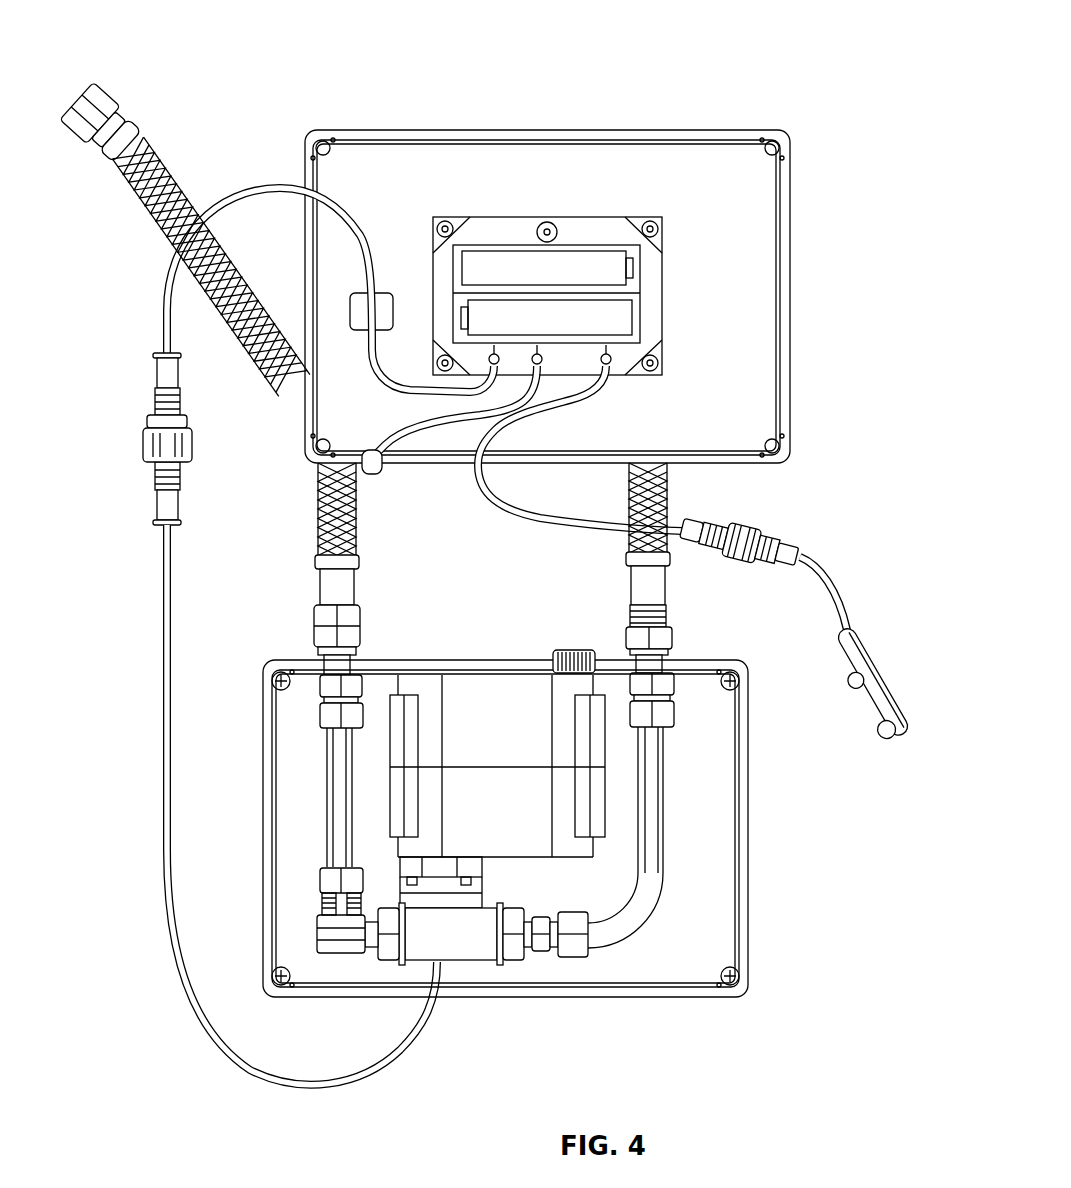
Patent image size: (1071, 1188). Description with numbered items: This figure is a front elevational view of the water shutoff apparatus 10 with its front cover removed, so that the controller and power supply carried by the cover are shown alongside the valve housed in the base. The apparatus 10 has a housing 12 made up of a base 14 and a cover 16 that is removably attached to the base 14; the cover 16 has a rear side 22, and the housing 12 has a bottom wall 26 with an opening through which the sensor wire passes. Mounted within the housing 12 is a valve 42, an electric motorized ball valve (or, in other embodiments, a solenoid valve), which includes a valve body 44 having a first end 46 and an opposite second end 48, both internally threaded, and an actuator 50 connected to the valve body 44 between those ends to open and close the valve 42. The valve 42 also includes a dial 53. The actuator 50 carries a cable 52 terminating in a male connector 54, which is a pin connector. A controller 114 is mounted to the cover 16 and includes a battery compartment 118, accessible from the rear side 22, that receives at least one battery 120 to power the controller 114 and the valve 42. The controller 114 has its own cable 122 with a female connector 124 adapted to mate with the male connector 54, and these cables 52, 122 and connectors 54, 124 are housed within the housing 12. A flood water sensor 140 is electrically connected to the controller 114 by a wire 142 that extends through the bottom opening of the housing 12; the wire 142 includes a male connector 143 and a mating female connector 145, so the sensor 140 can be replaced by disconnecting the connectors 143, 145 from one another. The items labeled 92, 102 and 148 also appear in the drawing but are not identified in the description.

The water shutoff apparatus 10 is at (858, 463).
The housing 12 is at (752, 760).
The base 14 is at (745, 838).
The cover 16 is at (792, 338).
The rear side 22 is at (752, 292).
The bottom wall 26 is at (470, 467).
The valve 42 is at (400, 868).
The valve body 44 is at (462, 945).
The first end 46 is at (400, 960).
The second end 48 is at (497, 958).
The actuator 50 is at (478, 705).
The cable 52 is at (178, 712).
The dial 53 is at (572, 655).
The male connector 54 is at (158, 447).
The supply hose 92 is at (335, 508).
The output hose 102 is at (655, 480).
The controller 114 is at (600, 232).
The battery compartment 118 is at (455, 266).
The battery 120 is at (510, 272).
The cable 122 is at (263, 195).
The female connector 124 is at (167, 418).
The flood water sensor 140 is at (870, 690).
The wire 142 is at (825, 577).
The male connector 143 is at (785, 566).
The female connector 145 is at (692, 535).
The grommet 148 is at (375, 472).